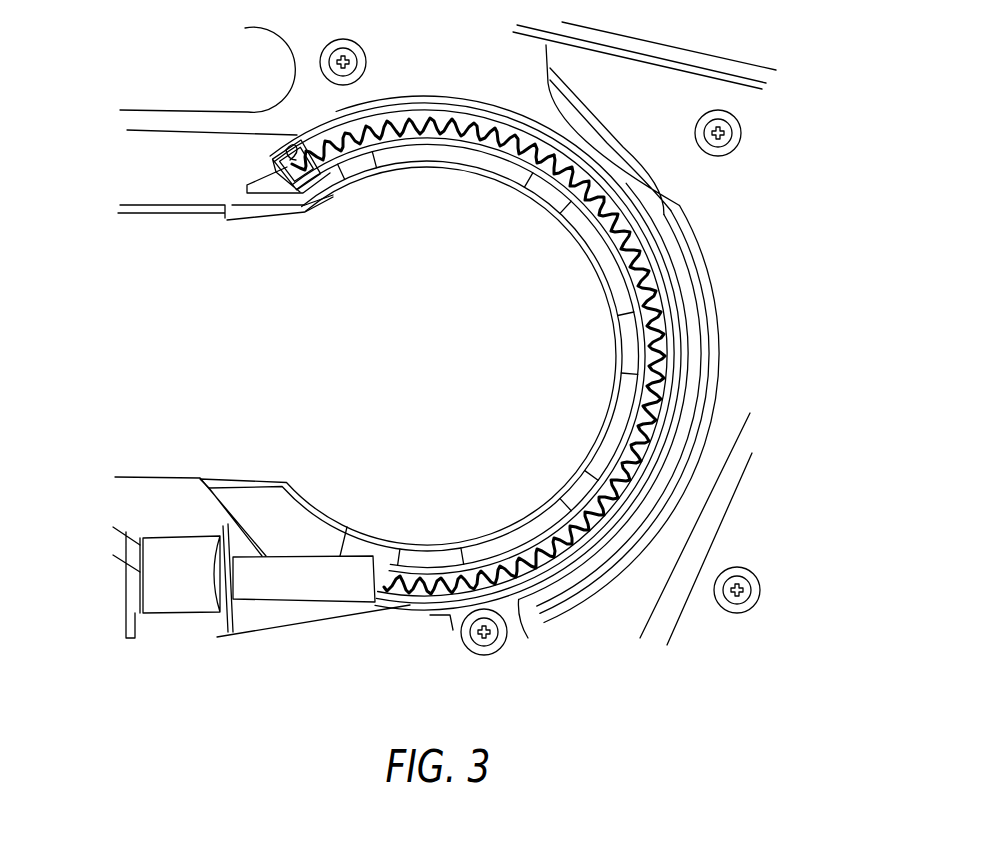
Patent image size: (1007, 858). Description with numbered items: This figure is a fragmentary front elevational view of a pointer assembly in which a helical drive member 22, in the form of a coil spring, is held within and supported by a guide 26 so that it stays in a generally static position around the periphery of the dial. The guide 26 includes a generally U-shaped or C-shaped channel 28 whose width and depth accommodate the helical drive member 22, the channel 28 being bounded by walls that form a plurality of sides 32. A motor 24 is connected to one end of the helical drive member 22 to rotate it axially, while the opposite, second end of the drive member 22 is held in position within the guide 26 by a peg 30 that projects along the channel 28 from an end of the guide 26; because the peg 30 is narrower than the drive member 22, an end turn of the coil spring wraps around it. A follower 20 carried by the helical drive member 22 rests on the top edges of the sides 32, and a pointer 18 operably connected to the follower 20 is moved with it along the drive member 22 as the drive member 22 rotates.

The pointer 18 is at (590, 512).
The follower 20 is at (653, 442).
The helical drive member 22 is at (657, 303).
The motor 24 is at (193, 593).
The guide 26 is at (530, 600).
The channel 28 is at (607, 215).
The peg 30 is at (300, 158).
The sides 32 is at (447, 137).